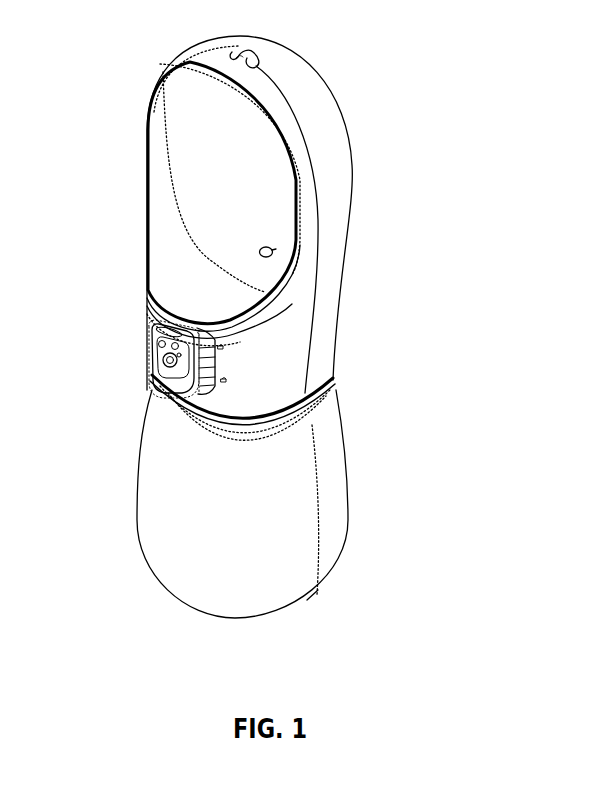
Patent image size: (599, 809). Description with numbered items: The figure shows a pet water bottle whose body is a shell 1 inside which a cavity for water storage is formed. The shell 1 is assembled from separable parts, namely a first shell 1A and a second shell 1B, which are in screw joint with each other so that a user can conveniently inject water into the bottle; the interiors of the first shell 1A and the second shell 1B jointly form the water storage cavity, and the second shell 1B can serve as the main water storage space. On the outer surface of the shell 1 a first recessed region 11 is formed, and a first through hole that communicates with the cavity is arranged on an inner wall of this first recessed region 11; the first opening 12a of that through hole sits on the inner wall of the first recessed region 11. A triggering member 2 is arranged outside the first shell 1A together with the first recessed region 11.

The shell 1 is at (272, 327).
The first shell 1A is at (317, 353).
The second shell 1B is at (328, 508).
The first recessed region 11 is at (208, 192).
The first opening 12a is at (273, 252).
The triggering member 2 is at (155, 350).